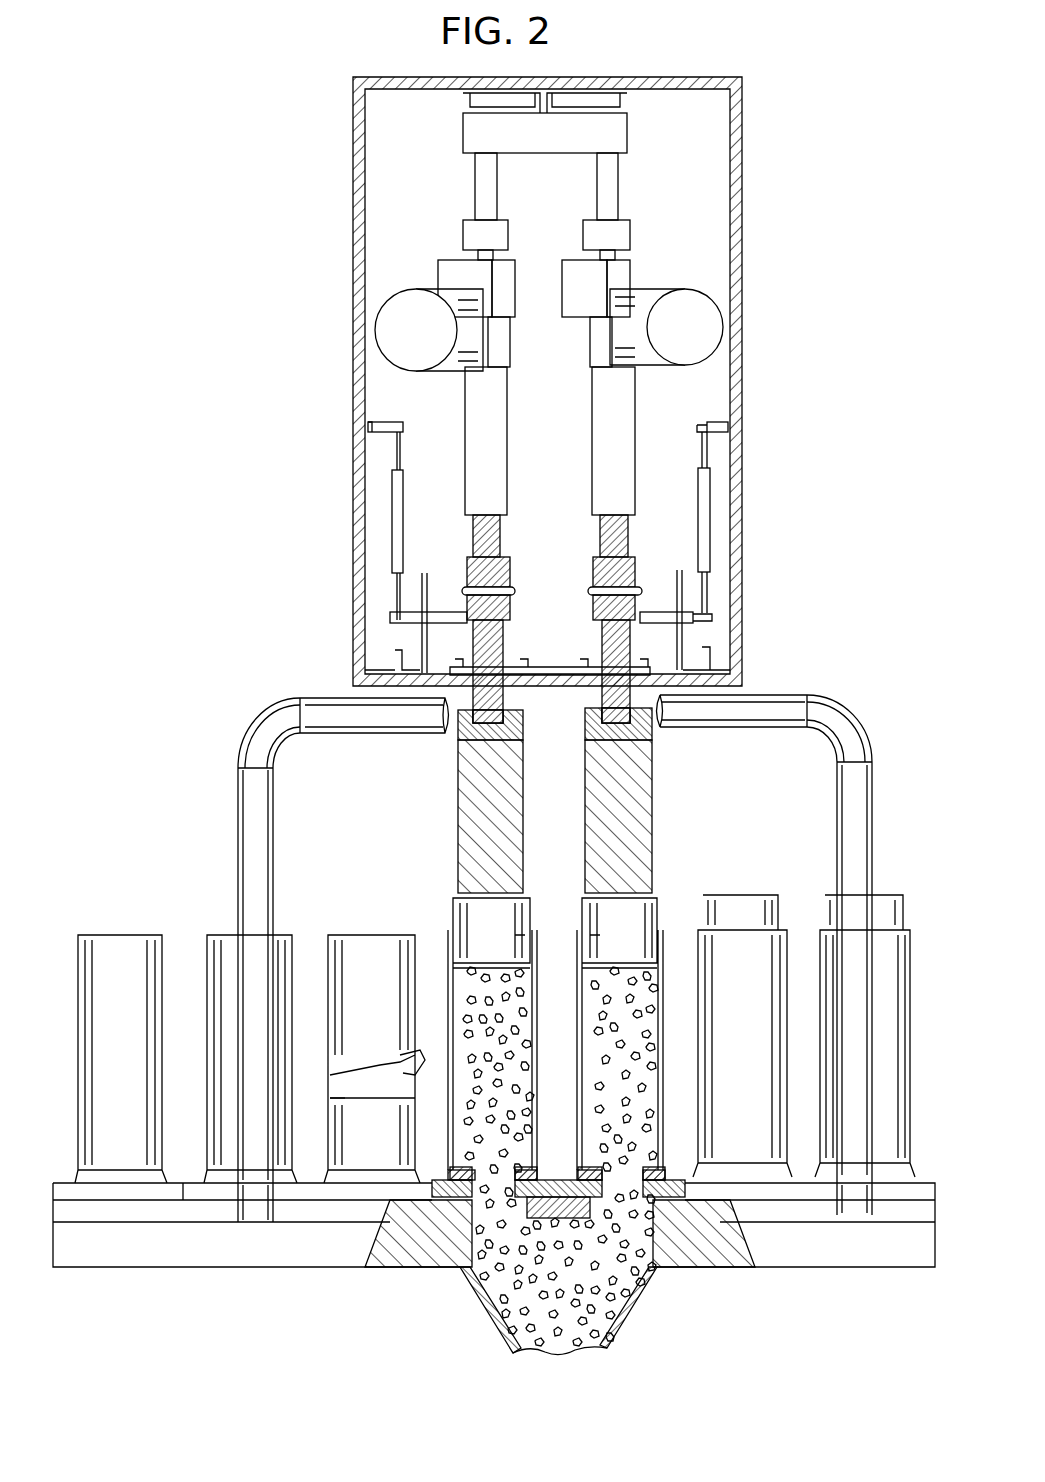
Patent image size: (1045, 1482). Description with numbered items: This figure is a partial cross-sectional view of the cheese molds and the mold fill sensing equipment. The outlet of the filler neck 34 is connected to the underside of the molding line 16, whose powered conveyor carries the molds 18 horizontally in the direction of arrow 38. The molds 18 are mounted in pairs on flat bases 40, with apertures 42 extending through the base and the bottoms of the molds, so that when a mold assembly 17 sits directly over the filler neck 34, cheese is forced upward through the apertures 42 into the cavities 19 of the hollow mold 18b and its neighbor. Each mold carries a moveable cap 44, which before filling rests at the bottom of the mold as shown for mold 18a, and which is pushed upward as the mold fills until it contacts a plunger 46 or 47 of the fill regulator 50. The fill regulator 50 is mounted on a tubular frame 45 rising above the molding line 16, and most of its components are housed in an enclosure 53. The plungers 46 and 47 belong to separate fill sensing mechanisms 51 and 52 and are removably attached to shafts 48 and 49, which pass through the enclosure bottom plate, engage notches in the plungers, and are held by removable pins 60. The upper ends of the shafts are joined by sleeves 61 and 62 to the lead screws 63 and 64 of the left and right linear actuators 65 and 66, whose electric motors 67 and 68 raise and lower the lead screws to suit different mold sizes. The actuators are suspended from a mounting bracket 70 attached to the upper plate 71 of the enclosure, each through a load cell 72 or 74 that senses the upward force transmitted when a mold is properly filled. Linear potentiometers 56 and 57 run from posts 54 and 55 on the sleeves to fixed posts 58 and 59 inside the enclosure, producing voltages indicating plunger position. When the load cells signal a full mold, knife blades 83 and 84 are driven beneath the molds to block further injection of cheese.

The molding line 16 is at (318, 1250).
The mold assembly 17 is at (675, 985).
The molds 18 is at (125, 932).
The mold 18a is at (383, 940).
The left mold 18b is at (453, 945).
The cavities 19 is at (460, 1030).
The filler neck 34 is at (470, 1300).
The arrow 38 is at (197, 810).
The flat bases 40 is at (445, 1180).
The apertures 42 is at (592, 1170).
The moveable cap 44 is at (362, 1130).
The tubular frame 45 is at (848, 722).
The plunger 46 is at (458, 800).
The plunger 47 is at (650, 808).
The shaft 48 is at (505, 645).
The shaft 49 is at (600, 642).
The fill regulator 50 is at (355, 237).
The fill sensing mechanism 51 is at (450, 398).
The fill sensing mechanism 52 is at (655, 395).
The enclosure 53 is at (372, 549).
The post 54 is at (443, 610).
The post 55 is at (660, 610).
The linear potentiometer 56 is at (392, 503).
The linear potentiometer 57 is at (705, 525).
The fixed post 58 is at (375, 425).
The fixed post 59 is at (722, 415).
The removable pins 60 is at (585, 732).
The sleeve 61 is at (512, 604).
The sleeve 62 is at (597, 608).
The lead screw 63 is at (502, 556).
The lead screw 64 is at (598, 530).
The left linear actuator 65 is at (480, 470).
The right linear actuator 66 is at (615, 415).
The electric motor 67 is at (418, 300).
The electric motor 68 is at (690, 305).
The mounting bracket 70 is at (622, 132).
The upper plate 71 is at (405, 93).
The load cell 72 is at (480, 185).
The load cell 74 is at (612, 190).
The knife blade 83 is at (680, 1265).
The knife blade 84 is at (400, 1265).